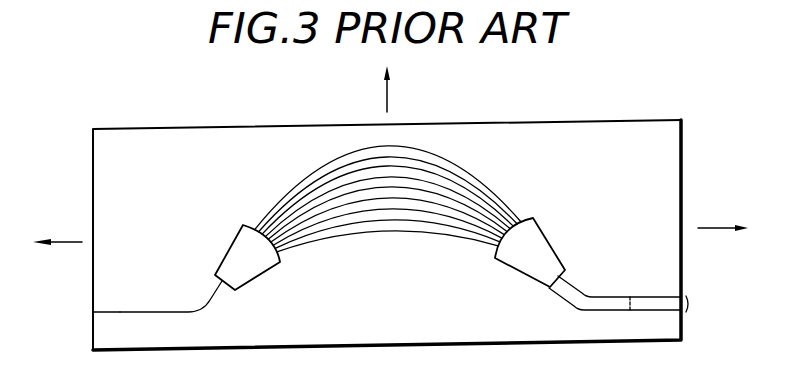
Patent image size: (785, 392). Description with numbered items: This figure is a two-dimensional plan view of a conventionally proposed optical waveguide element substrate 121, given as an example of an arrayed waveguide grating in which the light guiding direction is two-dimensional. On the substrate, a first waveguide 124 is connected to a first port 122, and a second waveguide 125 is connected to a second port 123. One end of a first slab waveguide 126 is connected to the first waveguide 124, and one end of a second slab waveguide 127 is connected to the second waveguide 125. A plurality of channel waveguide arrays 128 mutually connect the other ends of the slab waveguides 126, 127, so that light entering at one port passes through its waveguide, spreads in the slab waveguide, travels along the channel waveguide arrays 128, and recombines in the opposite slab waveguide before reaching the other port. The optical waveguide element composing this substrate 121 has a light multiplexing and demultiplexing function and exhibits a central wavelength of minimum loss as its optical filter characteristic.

The optical waveguide element substrate 121 is at (630, 120).
The first port 122 is at (96, 312).
The second port 123 is at (706, 304).
The first waveguide 124 is at (159, 312).
The second waveguide 125 is at (638, 313).
The first slab waveguide 126 is at (231, 249).
The second slab waveguide 127 is at (544, 240).
The channel waveguide arrays 128 is at (447, 154).